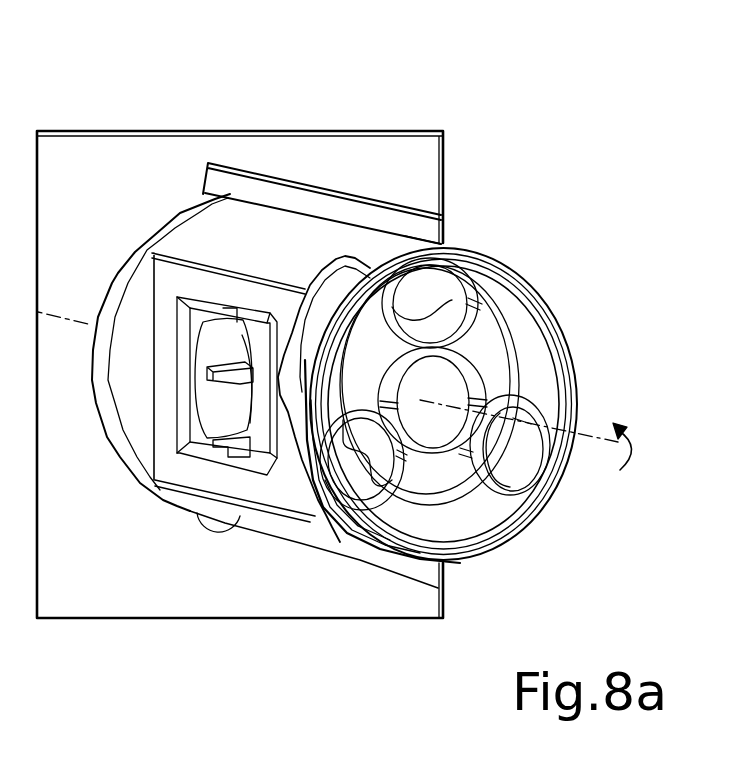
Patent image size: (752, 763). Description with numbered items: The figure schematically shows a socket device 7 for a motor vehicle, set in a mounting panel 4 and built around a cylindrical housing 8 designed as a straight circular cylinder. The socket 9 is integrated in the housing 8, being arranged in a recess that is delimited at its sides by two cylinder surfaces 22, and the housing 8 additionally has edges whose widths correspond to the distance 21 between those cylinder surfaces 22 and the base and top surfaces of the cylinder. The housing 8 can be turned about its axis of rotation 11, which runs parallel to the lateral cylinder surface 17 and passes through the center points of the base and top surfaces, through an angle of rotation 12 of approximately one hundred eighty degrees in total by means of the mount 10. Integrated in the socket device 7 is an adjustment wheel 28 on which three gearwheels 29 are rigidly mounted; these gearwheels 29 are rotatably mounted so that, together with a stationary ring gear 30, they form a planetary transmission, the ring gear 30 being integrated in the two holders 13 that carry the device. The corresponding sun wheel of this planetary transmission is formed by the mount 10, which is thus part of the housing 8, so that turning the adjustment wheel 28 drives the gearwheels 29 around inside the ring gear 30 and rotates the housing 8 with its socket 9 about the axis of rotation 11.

The mounting panel / wall 4 is at (93, 192).
The socket device 7 is at (118, 488).
The housing 8 is at (273, 251).
The socket 9 is at (196, 428).
The mount 10 is at (440, 393).
The axis of rotation 11 is at (592, 437).
The angle of rotation 12 is at (632, 450).
The holders 13 is at (330, 204).
The lateral cylinder surface 17 is at (369, 240).
The distance 21 is at (90, 263).
The cylinder surfaces 22 is at (124, 321).
The adjustment wheel 28 is at (300, 483).
The gearwheels 29 is at (453, 318).
The ring gear 30 is at (507, 264).